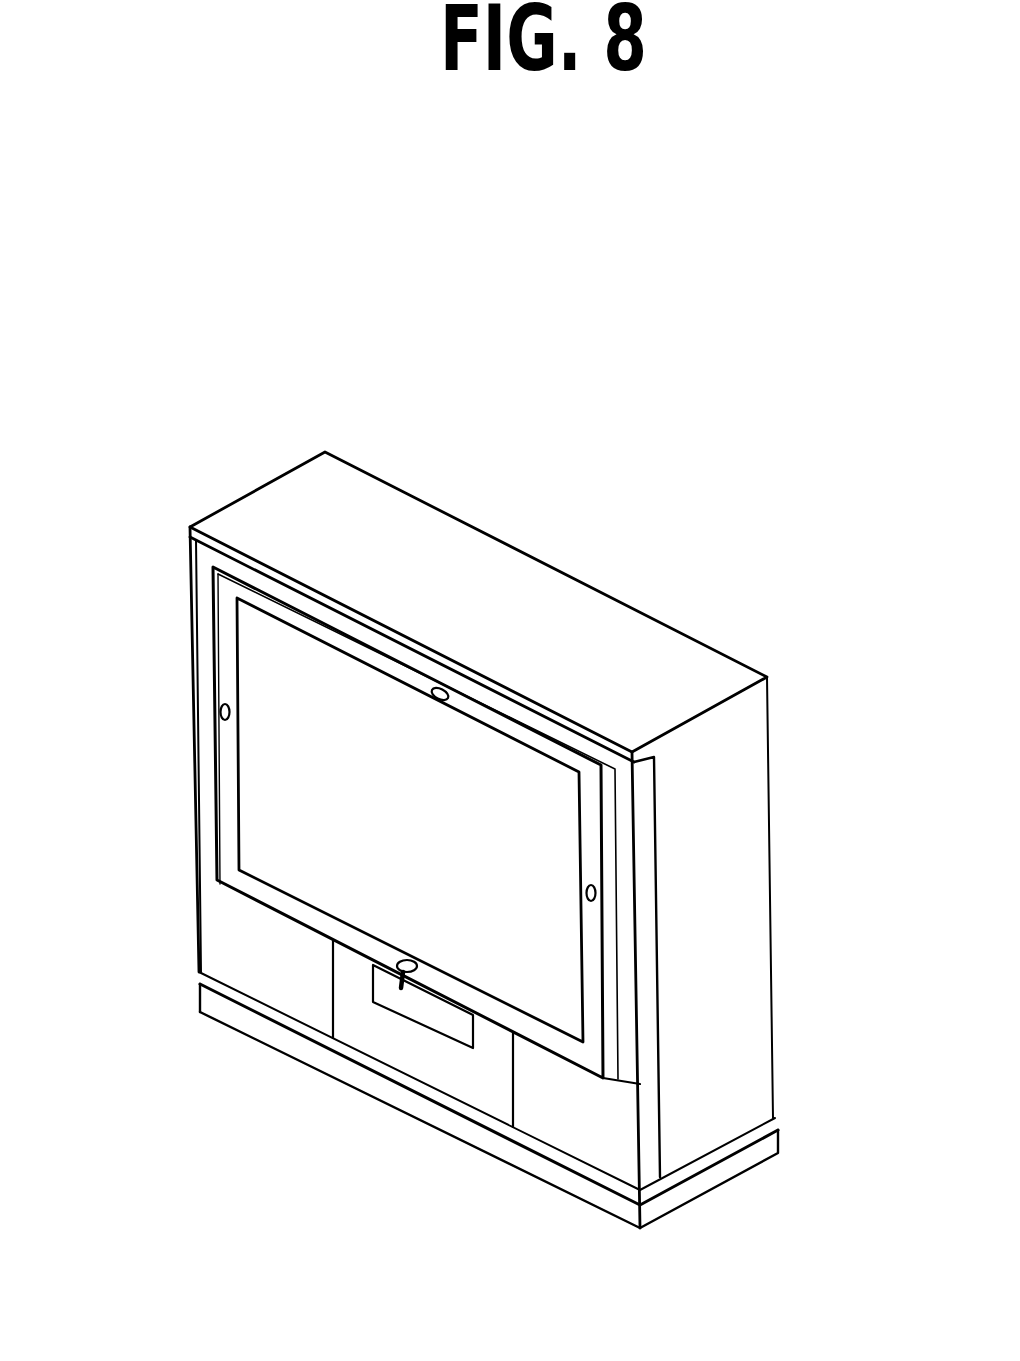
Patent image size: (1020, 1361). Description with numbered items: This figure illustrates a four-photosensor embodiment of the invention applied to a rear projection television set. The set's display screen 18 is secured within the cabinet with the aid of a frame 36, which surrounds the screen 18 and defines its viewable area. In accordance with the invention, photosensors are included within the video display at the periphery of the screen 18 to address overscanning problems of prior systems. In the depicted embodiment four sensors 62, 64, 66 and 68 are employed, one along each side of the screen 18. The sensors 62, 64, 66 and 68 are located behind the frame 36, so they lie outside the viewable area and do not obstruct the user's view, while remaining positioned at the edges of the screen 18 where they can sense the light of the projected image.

The screen 18 is at (363, 855).
The frame 36 is at (220, 875).
The photosensor 62 is at (600, 1014).
The photosensor 64 is at (401, 988).
The photosensor 66 is at (197, 704).
The photosensor 68 is at (455, 636).